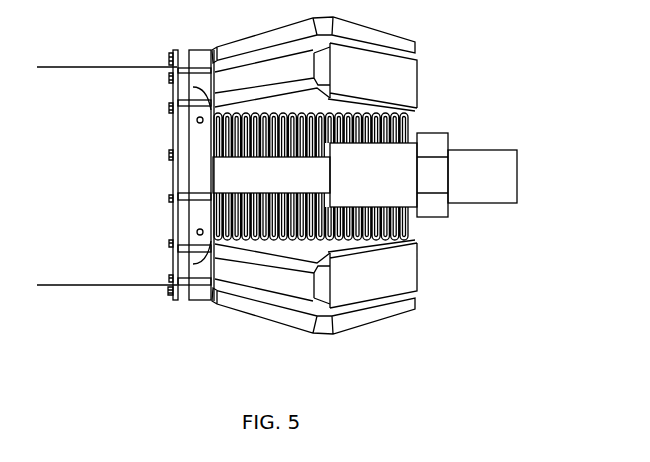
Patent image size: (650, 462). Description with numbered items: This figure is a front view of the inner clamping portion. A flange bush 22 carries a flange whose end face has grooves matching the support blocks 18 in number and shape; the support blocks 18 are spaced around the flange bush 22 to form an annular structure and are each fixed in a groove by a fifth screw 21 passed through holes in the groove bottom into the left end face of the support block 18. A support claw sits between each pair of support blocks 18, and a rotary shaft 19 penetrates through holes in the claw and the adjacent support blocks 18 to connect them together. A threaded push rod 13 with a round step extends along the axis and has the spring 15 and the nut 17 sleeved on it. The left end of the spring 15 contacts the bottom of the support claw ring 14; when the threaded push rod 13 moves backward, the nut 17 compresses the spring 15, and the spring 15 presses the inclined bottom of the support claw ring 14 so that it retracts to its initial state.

The threaded push rod 13 is at (468, 158).
The support claw ring 14 is at (260, 270).
The spring 15 is at (407, 126).
The nut 17 is at (427, 210).
The support block 18 is at (199, 113).
The rotary shaft 19 is at (200, 123).
The fifth screw 21 is at (172, 200).
The flange bush 22 is at (177, 127).